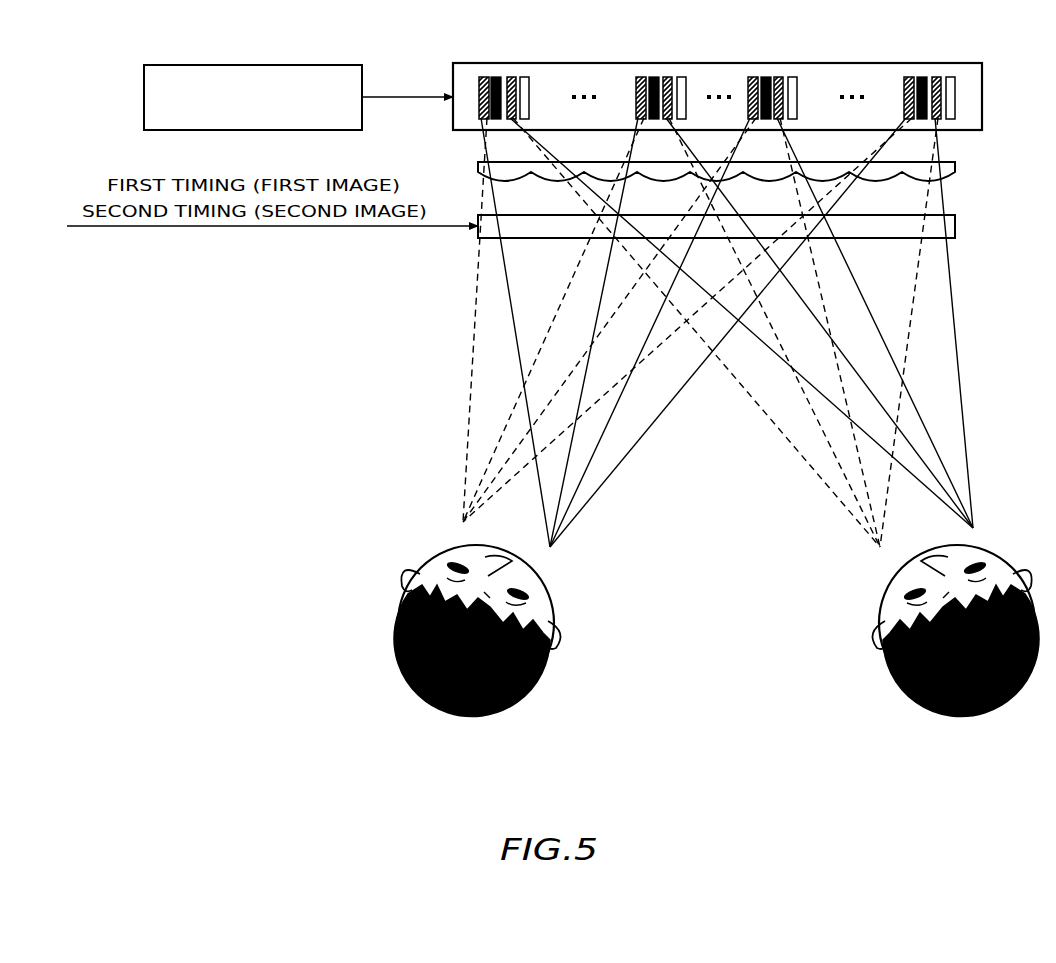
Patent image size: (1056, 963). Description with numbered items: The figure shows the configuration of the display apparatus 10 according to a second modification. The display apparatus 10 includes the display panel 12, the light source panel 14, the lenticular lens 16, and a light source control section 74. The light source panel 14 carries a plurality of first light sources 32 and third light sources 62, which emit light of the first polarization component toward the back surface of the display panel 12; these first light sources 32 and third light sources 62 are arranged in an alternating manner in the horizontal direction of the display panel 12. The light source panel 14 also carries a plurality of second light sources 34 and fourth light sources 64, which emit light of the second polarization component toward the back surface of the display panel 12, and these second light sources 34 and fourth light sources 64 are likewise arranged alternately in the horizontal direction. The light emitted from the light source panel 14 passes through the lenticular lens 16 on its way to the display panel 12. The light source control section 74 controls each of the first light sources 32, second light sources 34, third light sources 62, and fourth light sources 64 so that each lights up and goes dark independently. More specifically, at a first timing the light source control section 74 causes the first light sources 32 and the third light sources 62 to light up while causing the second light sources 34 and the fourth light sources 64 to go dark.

The display apparatus 10 is at (561, 793).
The display panel 12 is at (955, 228).
The light source panel 14 is at (982, 97).
The lenticular lens 16 is at (955, 165).
The first light sources 32 is at (511, 77).
The second light sources 34 is at (483, 77).
The third light sources 62 is at (525, 77).
The fourth light sources 64 is at (496, 77).
The light source control section 74 is at (256, 65).